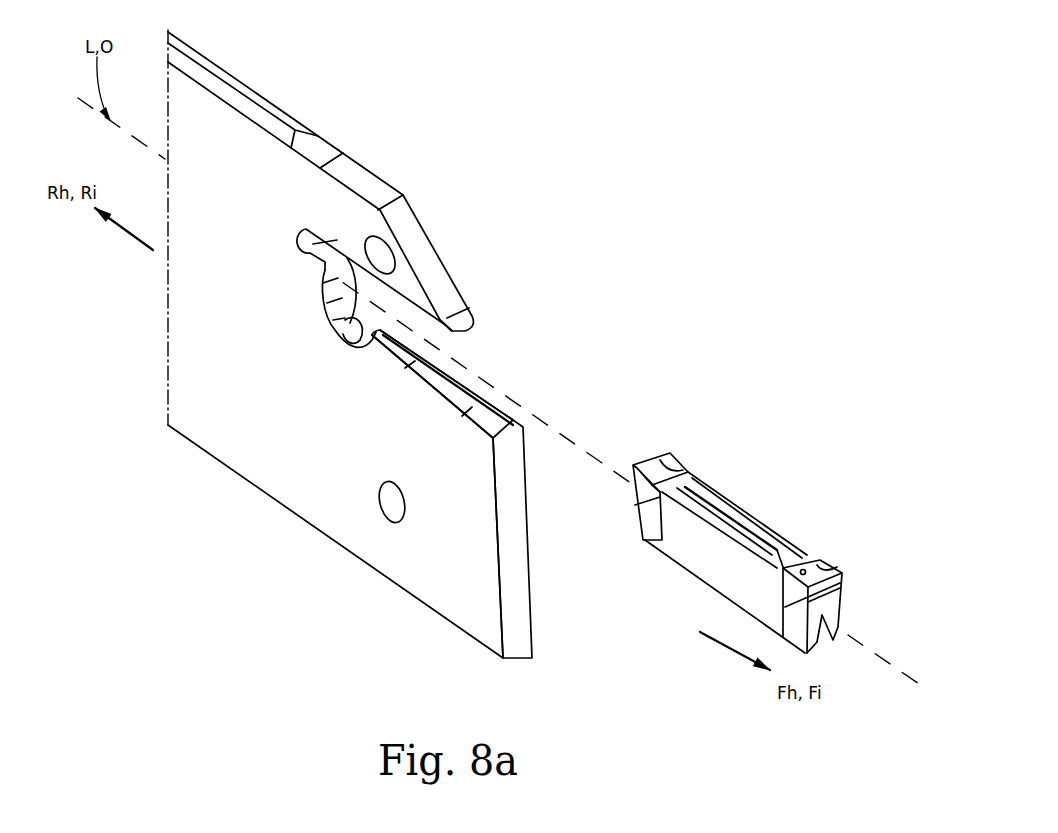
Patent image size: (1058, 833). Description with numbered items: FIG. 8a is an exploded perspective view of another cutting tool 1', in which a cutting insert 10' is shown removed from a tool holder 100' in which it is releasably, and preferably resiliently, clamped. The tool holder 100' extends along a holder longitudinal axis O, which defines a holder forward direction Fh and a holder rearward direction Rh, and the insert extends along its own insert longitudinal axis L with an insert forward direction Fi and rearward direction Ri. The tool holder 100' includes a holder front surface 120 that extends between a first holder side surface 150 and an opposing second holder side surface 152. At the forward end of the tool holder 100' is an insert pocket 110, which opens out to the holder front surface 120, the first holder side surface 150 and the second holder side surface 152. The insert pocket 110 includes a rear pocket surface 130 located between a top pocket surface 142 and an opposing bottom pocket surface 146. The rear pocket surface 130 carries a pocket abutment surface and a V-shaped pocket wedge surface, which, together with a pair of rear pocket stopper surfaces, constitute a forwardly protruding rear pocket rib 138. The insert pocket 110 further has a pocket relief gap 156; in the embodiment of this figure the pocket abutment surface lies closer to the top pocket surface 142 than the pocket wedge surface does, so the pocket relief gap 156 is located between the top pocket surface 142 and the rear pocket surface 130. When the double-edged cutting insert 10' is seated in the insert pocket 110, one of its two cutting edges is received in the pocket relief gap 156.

The cutting tool 1' is at (554, 371).
The tool holder 100' is at (424, 371).
The insert pocket 110 is at (530, 347).
The holder front surface 120 is at (513, 628).
The rear pocket surface 130 is at (392, 308).
The rear pocket rib 138 is at (306, 329).
The top pocket surface 142 is at (480, 327).
The bottom pocket surface 146 is at (523, 400).
The first holder side surface 150 is at (530, 590).
The second holder side surface 152 is at (420, 570).
The pocket relief gap 156 is at (340, 223).
The cutting insert 10' is at (796, 553).